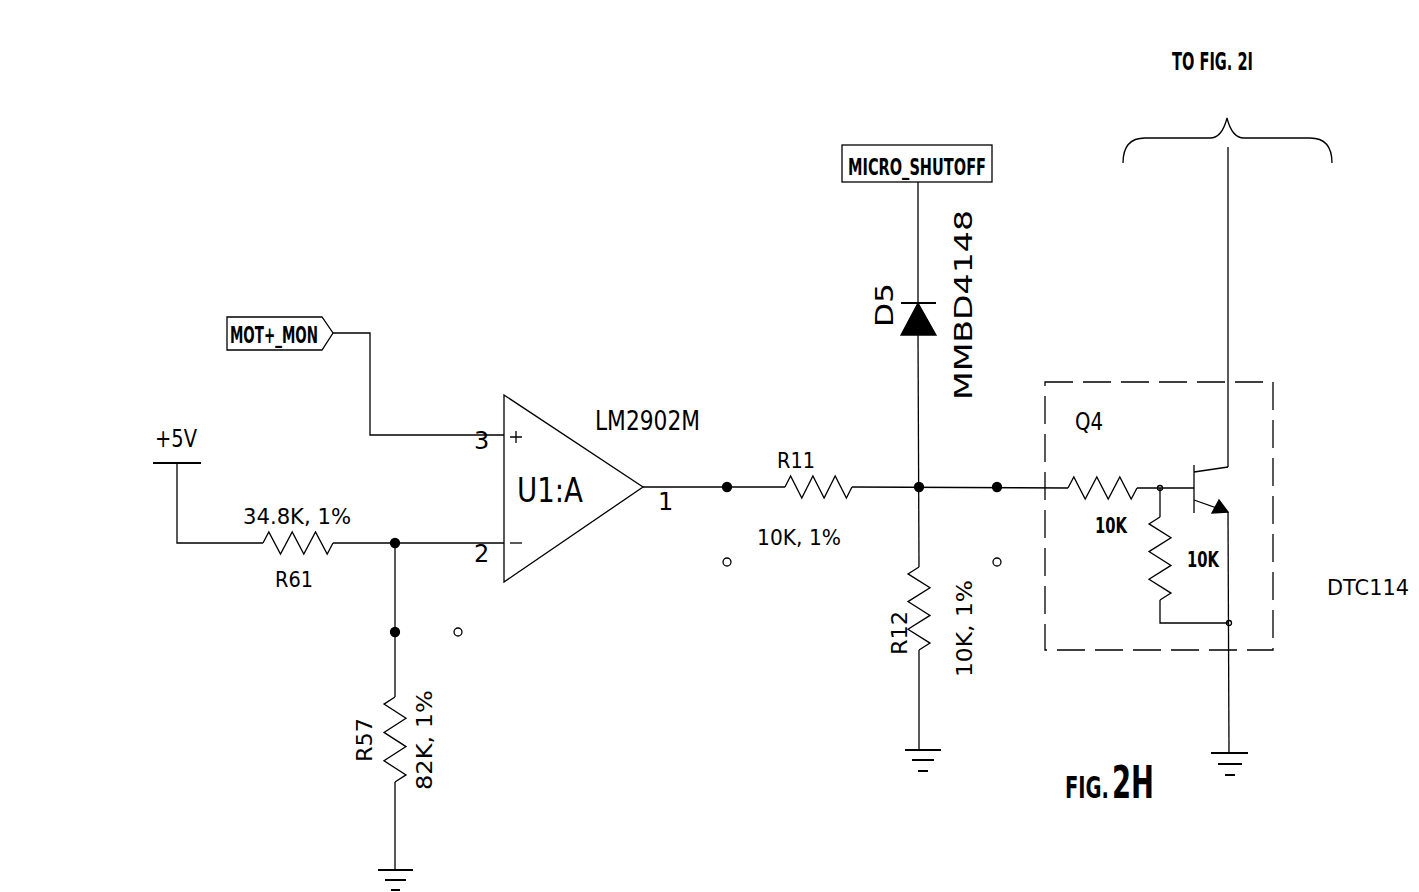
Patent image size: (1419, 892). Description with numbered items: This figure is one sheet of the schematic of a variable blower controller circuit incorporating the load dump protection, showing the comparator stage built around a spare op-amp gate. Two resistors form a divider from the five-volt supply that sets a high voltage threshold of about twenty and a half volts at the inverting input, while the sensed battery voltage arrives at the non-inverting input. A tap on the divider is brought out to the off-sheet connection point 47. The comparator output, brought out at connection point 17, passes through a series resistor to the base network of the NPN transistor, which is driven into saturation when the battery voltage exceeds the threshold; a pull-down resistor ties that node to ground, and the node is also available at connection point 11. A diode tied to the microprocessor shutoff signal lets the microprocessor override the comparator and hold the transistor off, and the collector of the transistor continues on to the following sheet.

The off-page connector terminal 47 is at (395, 632).
The off-page connector terminal 17 is at (727, 487).
The off-page connector terminal 11 is at (997, 487).